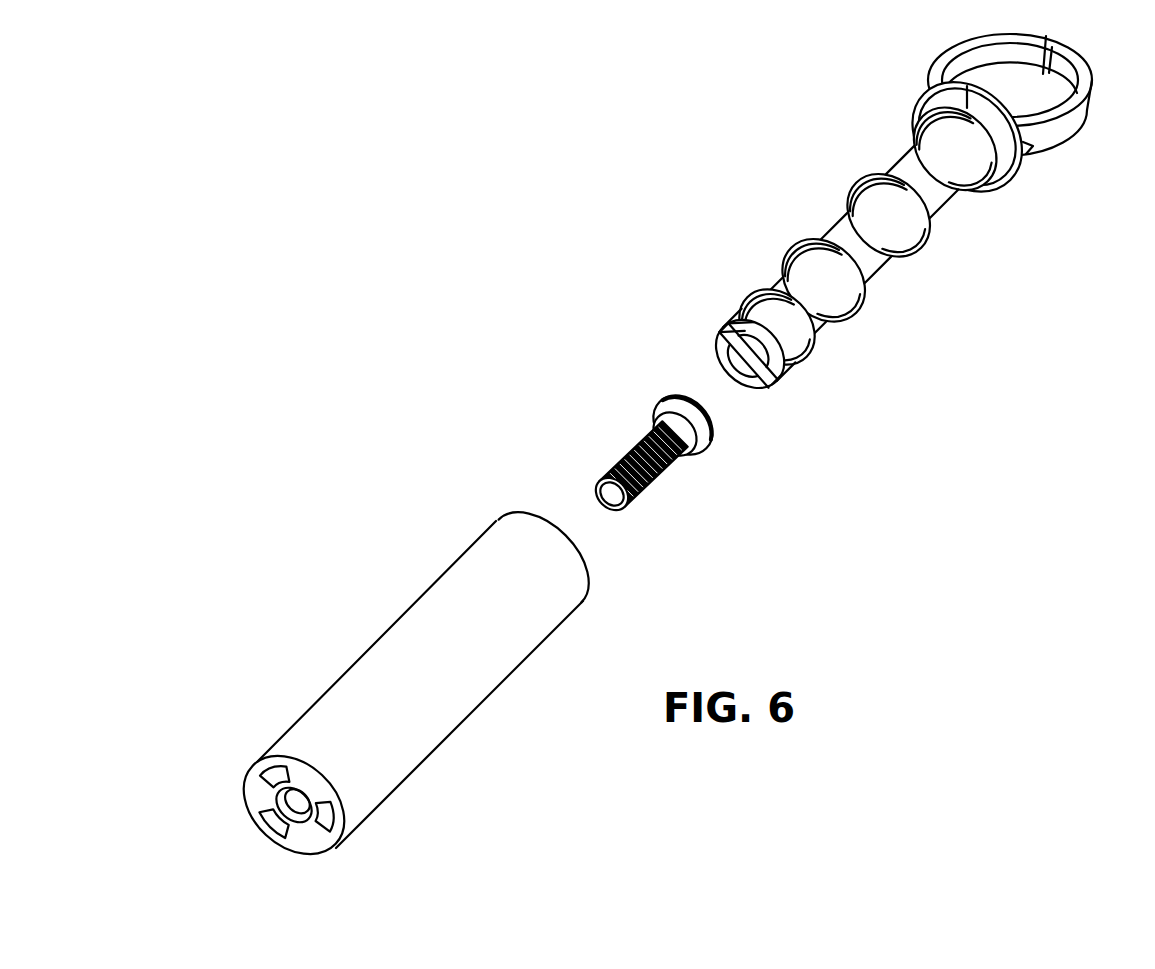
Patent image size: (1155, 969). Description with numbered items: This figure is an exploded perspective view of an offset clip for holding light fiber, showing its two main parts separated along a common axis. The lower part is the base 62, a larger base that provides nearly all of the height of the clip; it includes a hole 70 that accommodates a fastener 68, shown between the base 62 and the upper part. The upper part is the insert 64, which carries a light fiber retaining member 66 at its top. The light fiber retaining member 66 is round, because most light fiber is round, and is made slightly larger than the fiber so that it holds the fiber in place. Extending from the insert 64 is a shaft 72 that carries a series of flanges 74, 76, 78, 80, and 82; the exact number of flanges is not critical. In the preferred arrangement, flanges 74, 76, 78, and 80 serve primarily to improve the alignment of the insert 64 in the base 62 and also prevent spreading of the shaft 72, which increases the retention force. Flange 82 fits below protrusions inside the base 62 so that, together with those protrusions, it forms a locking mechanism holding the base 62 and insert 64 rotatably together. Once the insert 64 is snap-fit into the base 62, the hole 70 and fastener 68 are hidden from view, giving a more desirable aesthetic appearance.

The base 62 is at (390, 660).
The insert 64 is at (1018, 189).
The light fiber retaining member 66 is at (1078, 130).
The fastener 68 is at (663, 470).
The hole 70 is at (296, 800).
The shaft 72 is at (875, 265).
The flange 74 is at (987, 180).
The flange 76 is at (928, 243).
The flange 78 is at (862, 305).
The flange 80 is at (815, 345).
The flange 82 is at (789, 376).